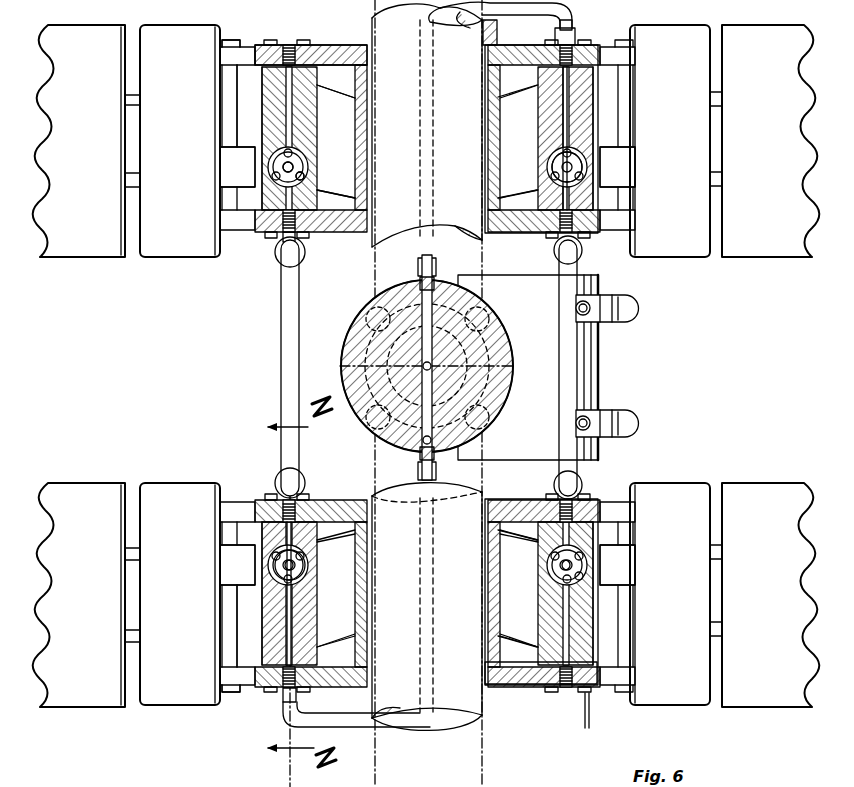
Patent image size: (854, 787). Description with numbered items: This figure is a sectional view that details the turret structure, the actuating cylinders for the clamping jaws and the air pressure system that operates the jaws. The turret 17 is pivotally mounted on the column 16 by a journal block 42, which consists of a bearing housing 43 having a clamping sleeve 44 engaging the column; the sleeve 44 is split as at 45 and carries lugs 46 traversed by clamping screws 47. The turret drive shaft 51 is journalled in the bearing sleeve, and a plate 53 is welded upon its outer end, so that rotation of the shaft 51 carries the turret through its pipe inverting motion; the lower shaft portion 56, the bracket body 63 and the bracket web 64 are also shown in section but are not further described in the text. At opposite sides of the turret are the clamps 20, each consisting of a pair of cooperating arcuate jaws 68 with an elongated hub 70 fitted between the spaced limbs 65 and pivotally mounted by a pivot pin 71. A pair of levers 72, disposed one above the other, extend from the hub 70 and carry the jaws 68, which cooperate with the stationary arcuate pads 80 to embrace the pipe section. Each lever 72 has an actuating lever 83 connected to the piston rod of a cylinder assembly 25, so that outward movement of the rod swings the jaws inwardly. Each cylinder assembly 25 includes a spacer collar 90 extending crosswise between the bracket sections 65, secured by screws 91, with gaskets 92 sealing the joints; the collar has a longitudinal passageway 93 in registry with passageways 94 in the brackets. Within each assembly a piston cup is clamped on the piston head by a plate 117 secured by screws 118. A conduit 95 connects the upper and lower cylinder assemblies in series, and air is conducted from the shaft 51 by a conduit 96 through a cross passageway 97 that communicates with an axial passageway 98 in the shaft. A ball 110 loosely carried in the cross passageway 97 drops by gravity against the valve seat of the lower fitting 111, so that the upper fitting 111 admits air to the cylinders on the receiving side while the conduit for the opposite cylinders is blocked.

The column 16 is at (576, 17).
The turret 17 is at (392, 44).
The clamp 20 is at (778, 235).
The cylinder assembly 25 is at (587, 147).
The journal block 42 is at (540, 292).
The bearing housing 43 is at (362, 334).
The clamping sleeve 44 is at (597, 398).
The split 45 is at (588, 375).
The lugs 46 is at (616, 300).
The clamping screws 47 is at (636, 308).
The turret drive shaft 51 is at (508, 400).
The plate 53 is at (503, 420).
The shaft 56 is at (466, 716).
The housing 63 is at (346, 236).
The bracket 64 is at (498, 117).
The limbs 65 is at (332, 44).
The jaws 68 is at (80, 250).
The hub 70 is at (228, 110).
The pivot pin 71 is at (225, 40).
The levers 72 is at (128, 100).
The stationary arcuate pads 80 is at (186, 250).
The actuating lever 83 is at (232, 166).
The spacer collar 90 is at (318, 147).
The screws 91 is at (548, 41).
The gaskets 92 is at (318, 208).
The longitudinal passageway 93 is at (562, 104).
The passageways 94 is at (276, 232).
The conduit 95 is at (282, 373).
The conduit 96 is at (423, 258).
The cross passageway 97 is at (433, 302).
The axial passageway 98 is at (423, 367).
The ball 110 is at (423, 441).
The fittings 111 is at (420, 282).
The plate 117 is at (274, 167).
The screws 118 is at (303, 173).